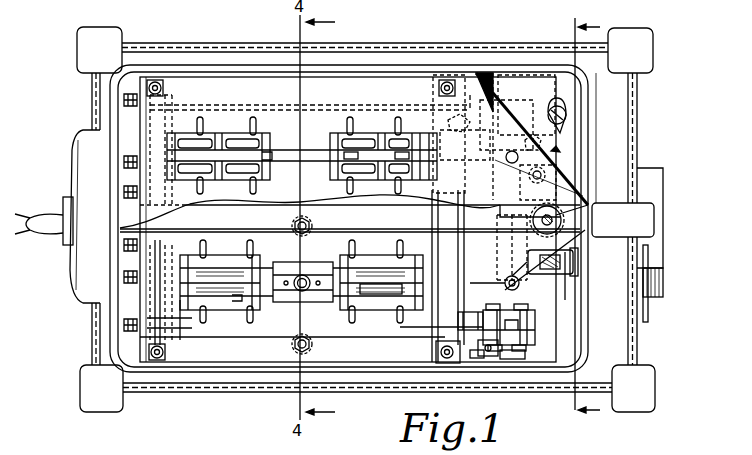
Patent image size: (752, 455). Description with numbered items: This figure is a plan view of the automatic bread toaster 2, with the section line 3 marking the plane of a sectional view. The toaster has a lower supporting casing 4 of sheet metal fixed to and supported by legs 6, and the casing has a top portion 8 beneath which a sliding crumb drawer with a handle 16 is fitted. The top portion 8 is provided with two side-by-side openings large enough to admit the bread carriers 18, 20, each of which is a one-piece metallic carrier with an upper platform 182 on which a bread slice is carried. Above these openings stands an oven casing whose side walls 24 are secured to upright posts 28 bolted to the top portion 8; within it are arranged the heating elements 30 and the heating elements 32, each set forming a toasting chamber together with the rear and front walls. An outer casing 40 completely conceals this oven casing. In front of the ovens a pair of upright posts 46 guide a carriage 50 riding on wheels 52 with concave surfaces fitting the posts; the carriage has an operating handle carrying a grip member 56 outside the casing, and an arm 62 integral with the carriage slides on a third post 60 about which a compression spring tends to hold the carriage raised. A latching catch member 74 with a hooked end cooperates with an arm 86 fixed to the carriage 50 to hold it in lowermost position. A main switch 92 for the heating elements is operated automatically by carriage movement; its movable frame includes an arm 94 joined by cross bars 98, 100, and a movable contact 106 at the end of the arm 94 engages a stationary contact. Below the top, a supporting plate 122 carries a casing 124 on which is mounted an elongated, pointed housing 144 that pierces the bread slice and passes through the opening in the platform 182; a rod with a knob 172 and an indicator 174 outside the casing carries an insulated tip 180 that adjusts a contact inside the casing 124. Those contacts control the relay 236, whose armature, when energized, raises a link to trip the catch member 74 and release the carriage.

The automatic bread toaster 2 is at (196, 44).
The section line 3- 3 is at (585, 221).
The lower supporting casing 4 is at (640, 356).
The legs 6 is at (78, 48).
The top portion 8 is at (617, 143).
The handle 16 is at (665, 260).
The bread carrier 18 is at (228, 297).
The bread carrier 20 is at (227, 133).
The side walls 24 is at (340, 104).
The upright posts 28 is at (447, 362).
The heating elements 30 is at (385, 212).
The heating elements 32 is at (256, 236).
The outer casing 40 is at (389, 49).
The upright posts 46 is at (514, 152).
The carriage 50 is at (553, 251).
The wheels 52 is at (521, 283).
The grip member 56 is at (654, 222).
The third post 60 is at (565, 205).
The arm 62 is at (562, 237).
The catch member 74 is at (570, 288).
The arm 86 is at (553, 272).
The main switch 92 is at (516, 369).
The arm 94 is at (532, 312).
The cross bar 98 is at (482, 360).
The cross bar 100 is at (536, 333).
The movable contact 106 is at (527, 363).
The supporting plate 122 is at (300, 330).
The casing 124 is at (301, 289).
The elongated housing 144 is at (305, 279).
The knob 172 is at (668, 283).
The indicator 174 is at (646, 318).
The tip 180 is at (371, 296).
The upper platform 182 is at (268, 156).
The relay 236 is at (491, 76).